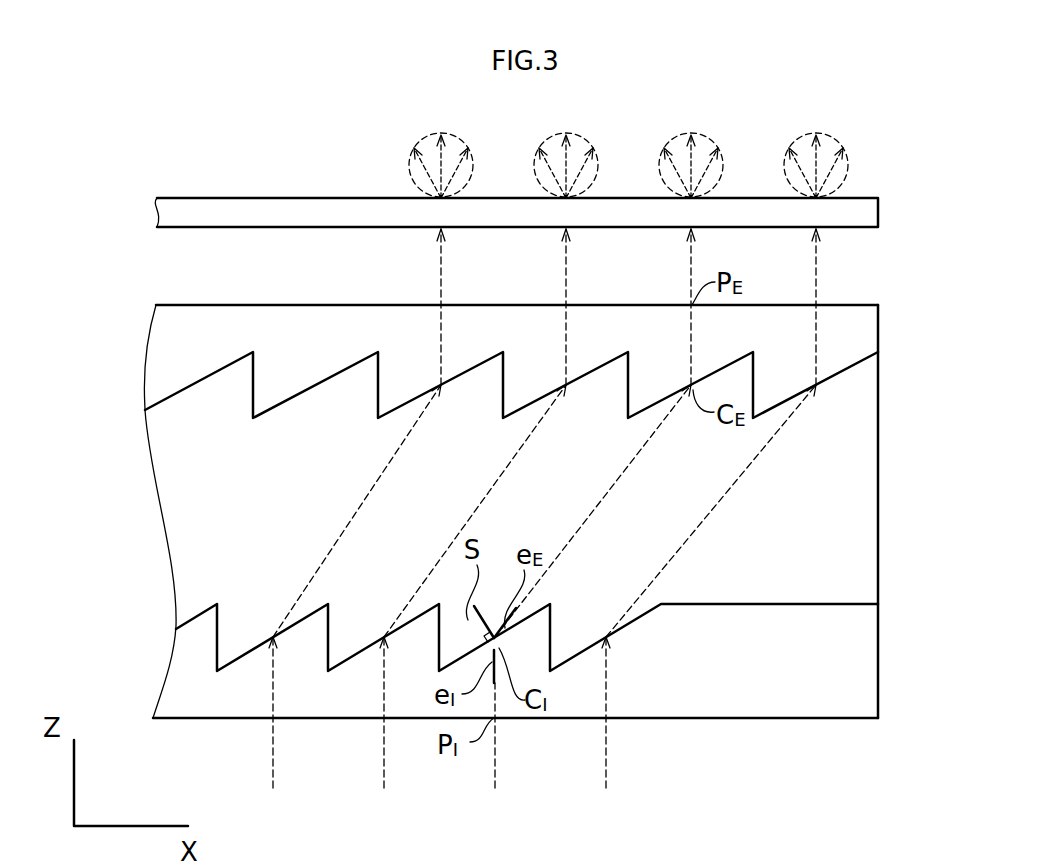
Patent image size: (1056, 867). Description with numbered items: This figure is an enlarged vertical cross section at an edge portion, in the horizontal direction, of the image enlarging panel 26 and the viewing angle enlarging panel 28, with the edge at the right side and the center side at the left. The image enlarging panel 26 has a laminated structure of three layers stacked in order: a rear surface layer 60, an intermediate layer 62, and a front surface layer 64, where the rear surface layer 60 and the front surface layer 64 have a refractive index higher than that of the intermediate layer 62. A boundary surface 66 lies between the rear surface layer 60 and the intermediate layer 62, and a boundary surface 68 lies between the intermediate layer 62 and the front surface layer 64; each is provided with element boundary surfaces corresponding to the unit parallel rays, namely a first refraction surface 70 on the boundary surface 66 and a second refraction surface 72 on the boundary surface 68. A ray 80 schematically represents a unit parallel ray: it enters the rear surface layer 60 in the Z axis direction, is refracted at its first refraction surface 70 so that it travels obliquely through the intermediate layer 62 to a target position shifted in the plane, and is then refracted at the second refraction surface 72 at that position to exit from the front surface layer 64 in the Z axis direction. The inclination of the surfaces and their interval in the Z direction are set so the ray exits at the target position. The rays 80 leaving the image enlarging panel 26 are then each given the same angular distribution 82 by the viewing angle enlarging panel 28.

The image enlarging panel 26 is at (966, 305).
The viewing angle enlarging panel 28 is at (880, 209).
The rear surface layer 60 is at (880, 665).
The intermediate layer 62 is at (880, 488).
The front surface layer 64 is at (880, 320).
The boundary surface 66 is at (868, 604).
The boundary surface 68 is at (858, 366).
The first refraction surface 70 is at (285, 633).
The second refraction surface 72 is at (467, 372).
The ray 80 is at (276, 781).
The angular distribution 82 is at (461, 140).